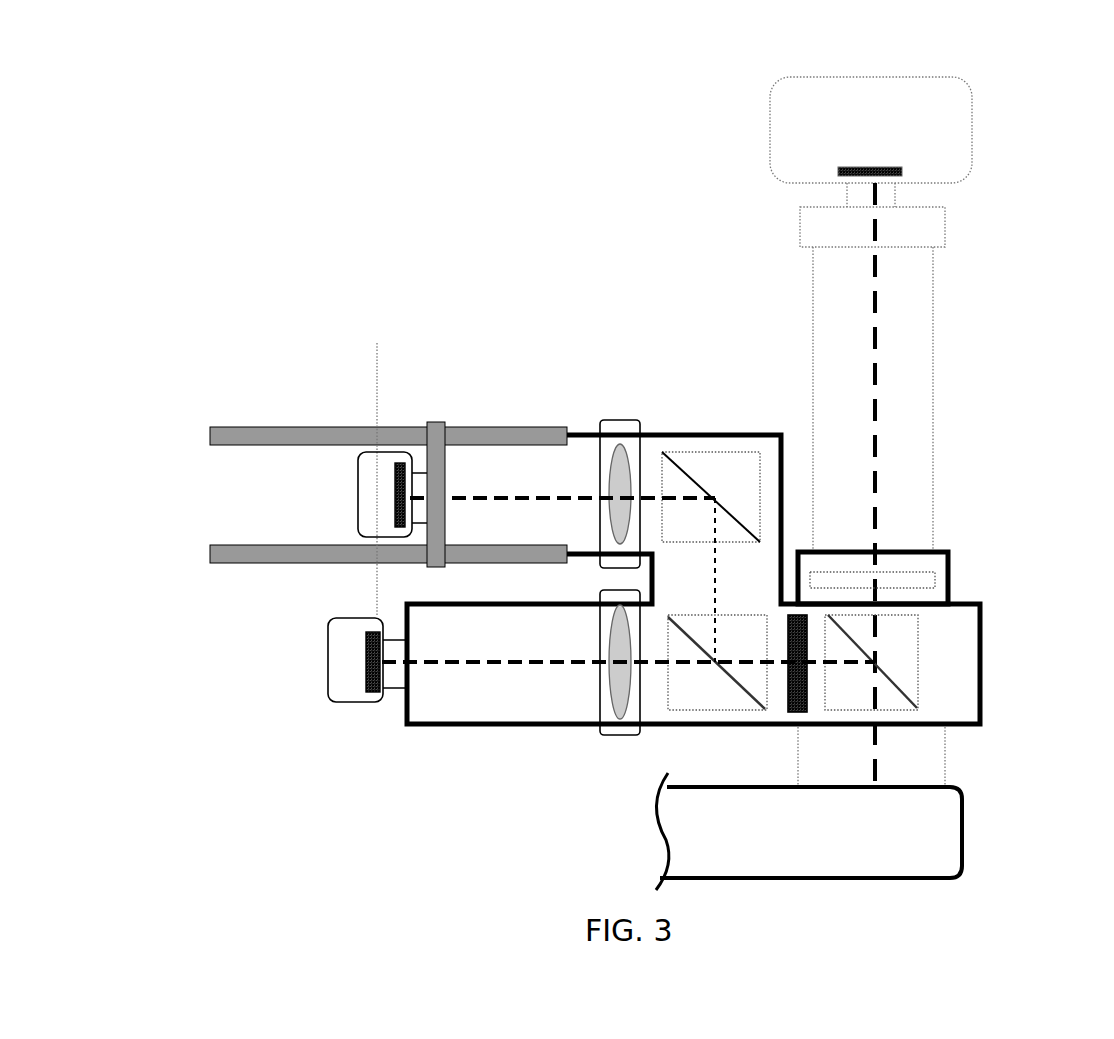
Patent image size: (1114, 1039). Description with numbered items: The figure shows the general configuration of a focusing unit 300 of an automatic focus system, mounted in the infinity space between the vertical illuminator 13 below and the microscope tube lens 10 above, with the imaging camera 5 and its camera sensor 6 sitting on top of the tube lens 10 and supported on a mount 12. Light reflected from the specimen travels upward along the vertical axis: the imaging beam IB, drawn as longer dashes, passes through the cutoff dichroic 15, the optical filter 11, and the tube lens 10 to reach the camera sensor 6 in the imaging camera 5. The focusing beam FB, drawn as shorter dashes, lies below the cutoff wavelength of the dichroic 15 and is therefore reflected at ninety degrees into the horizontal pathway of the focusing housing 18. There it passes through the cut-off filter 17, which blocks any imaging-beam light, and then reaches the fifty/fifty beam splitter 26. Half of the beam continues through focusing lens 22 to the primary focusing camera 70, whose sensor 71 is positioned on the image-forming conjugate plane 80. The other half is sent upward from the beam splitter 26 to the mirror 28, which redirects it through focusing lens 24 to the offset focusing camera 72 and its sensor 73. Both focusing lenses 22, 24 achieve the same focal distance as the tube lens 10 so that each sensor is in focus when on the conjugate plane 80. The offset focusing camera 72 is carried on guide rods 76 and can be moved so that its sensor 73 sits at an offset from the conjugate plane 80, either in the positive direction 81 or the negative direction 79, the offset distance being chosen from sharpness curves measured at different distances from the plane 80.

The focusing unit 300 is at (284, 228).
The imaging camera 5 is at (810, 122).
The camera sensor 6 is at (880, 167).
The mount 12 is at (800, 241).
The microscope tube lens 10 is at (908, 516).
The imaging beam IB is at (880, 371).
The optical filter 11 is at (913, 576).
The cutoff dichroic 15 is at (900, 662).
The cut-off filter 17 is at (798, 693).
The beam splitter 26 is at (732, 687).
The focusing lens 22 is at (610, 655).
The focusing lens 24 is at (622, 477).
The mirror 28 is at (703, 460).
The focusing housing 18 is at (582, 453).
The vertical illuminator 13 is at (967, 833).
The focusing beam FB is at (493, 500).
The primary focusing camera 70 is at (355, 678).
The sensor 71 is at (375, 700).
The offset focusing camera 72 is at (378, 507).
The sensor 73 is at (368, 478).
The guide rods 76 is at (253, 552).
The negative direction 79 is at (362, 378).
The image-forming conjugate plane 80 is at (405, 466).
The positive direction 81 is at (463, 378).